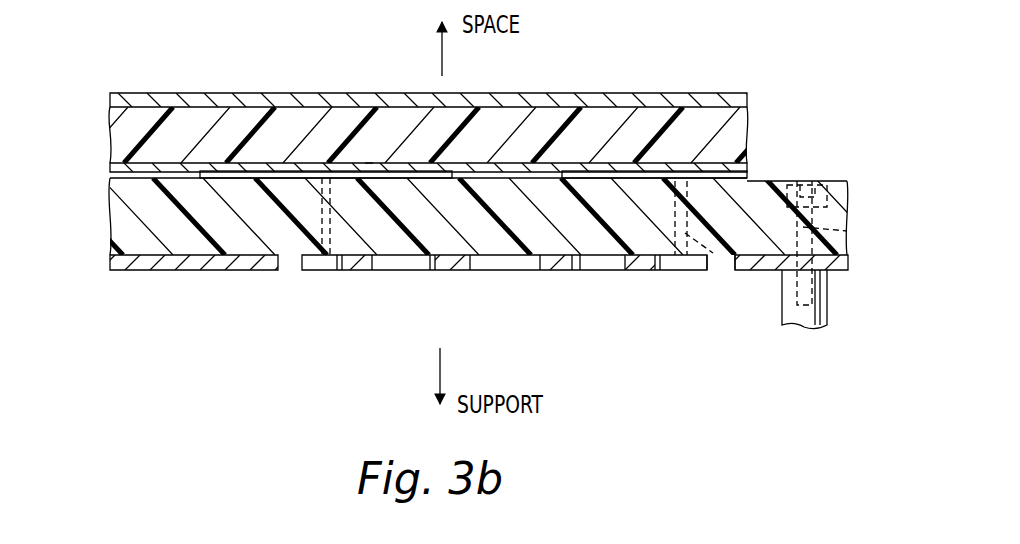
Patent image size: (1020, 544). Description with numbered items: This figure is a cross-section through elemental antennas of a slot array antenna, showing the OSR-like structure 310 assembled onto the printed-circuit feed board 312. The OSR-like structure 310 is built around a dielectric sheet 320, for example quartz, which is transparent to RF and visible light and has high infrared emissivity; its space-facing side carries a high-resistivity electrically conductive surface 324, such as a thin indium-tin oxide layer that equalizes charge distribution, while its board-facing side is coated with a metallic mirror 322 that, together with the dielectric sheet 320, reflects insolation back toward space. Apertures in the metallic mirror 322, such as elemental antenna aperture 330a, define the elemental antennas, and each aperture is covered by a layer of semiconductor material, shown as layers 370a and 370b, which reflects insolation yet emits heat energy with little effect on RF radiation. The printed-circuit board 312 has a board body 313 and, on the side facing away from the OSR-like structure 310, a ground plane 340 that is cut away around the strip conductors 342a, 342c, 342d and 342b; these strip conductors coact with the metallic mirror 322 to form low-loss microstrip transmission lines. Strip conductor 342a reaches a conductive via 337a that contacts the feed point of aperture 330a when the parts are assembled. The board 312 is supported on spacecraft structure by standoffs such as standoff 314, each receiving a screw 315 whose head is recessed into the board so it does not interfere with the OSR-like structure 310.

The OSR-like structure 310 is at (275, 60).
The printed-circuit feed board 312 is at (148, 310).
The high-resistivity electrically conductive surface 324 is at (109, 97).
The dielectric sheet 320 is at (109, 134).
The metallic mirror 322 is at (109, 168).
The lower substrate layer 313 is at (109, 226).
The ground plane 340 is at (110, 260).
The layer of semiconductor material 370a is at (369, 163).
The layer of semiconductor material 370b is at (747, 169).
The elemental antenna aperture 330a is at (228, 270).
The strip conductor 342a is at (358, 272).
The strip conductor 342c is at (455, 272).
The strip conductor 342d is at (556, 272).
The strip conductor 342b is at (645, 272).
The conductive via 337a is at (718, 272).
The screw 315 is at (847, 229).
The standoff 314 is at (812, 325).